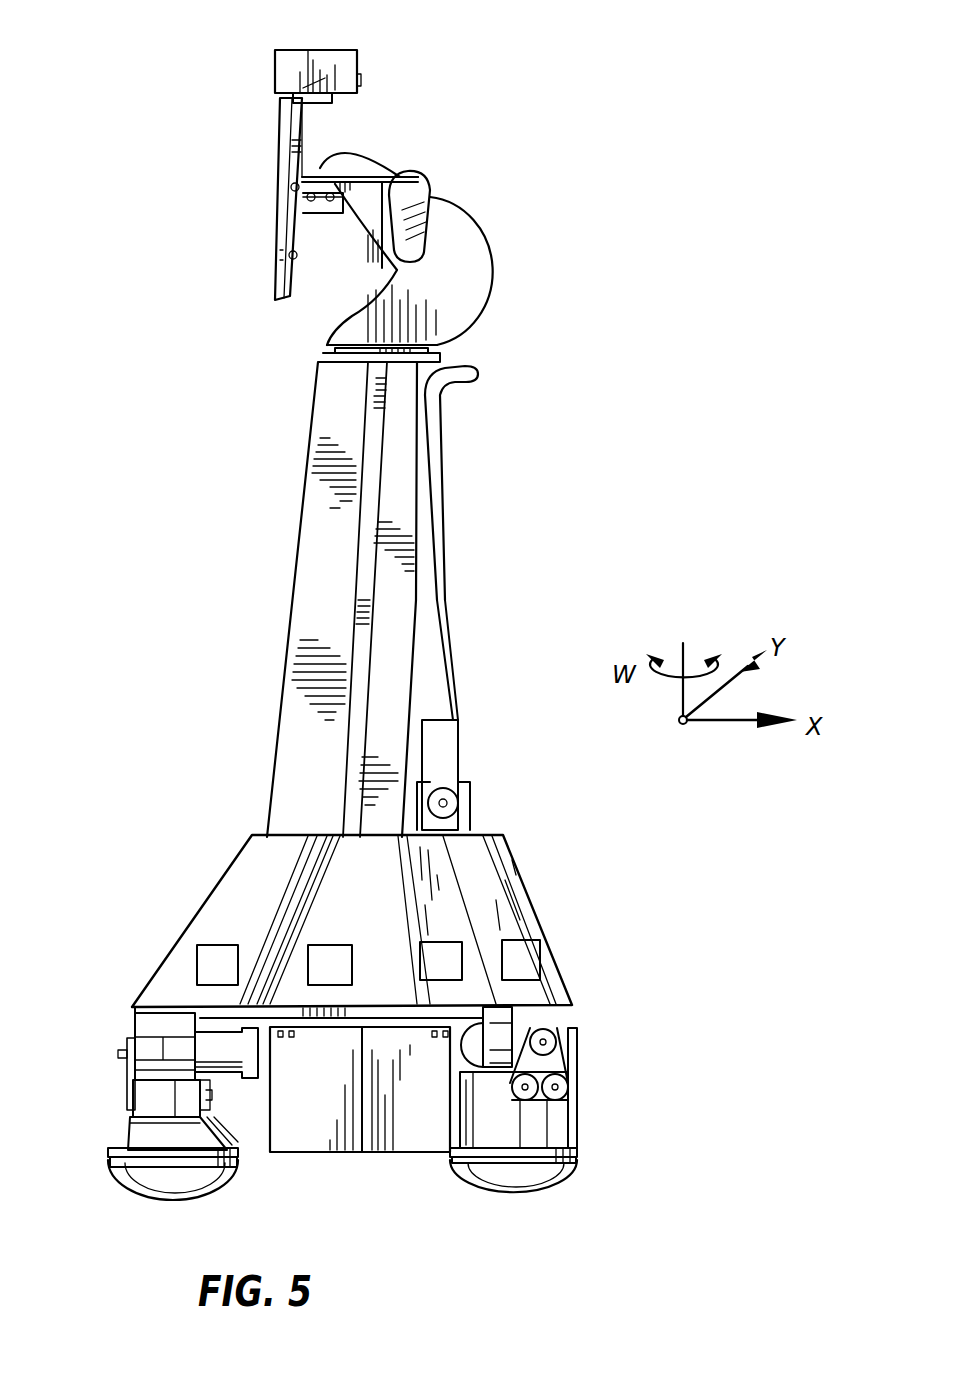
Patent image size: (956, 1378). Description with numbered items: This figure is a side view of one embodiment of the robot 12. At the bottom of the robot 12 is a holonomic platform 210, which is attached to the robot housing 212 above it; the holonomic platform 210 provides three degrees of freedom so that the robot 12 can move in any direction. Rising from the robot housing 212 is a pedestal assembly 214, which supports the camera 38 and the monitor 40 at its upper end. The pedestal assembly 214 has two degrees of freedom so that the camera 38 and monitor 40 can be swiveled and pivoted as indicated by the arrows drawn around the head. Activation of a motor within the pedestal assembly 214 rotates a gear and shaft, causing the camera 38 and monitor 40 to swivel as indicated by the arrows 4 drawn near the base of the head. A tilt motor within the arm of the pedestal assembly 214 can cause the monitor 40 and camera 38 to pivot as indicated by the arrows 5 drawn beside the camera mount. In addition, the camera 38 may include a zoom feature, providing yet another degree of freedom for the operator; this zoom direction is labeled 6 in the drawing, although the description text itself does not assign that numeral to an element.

The zoom direction 6 is at (290, 30).
The camera 38 is at (278, 79).
The monitor 40 is at (280, 178).
The arrows 5 is at (328, 237).
The arrows 4 is at (305, 327).
The pedestal assembly 214 is at (258, 493).
The robot 12 is at (560, 856).
The robot housing 212 is at (215, 890).
The holonomic platform 210 is at (418, 1170).